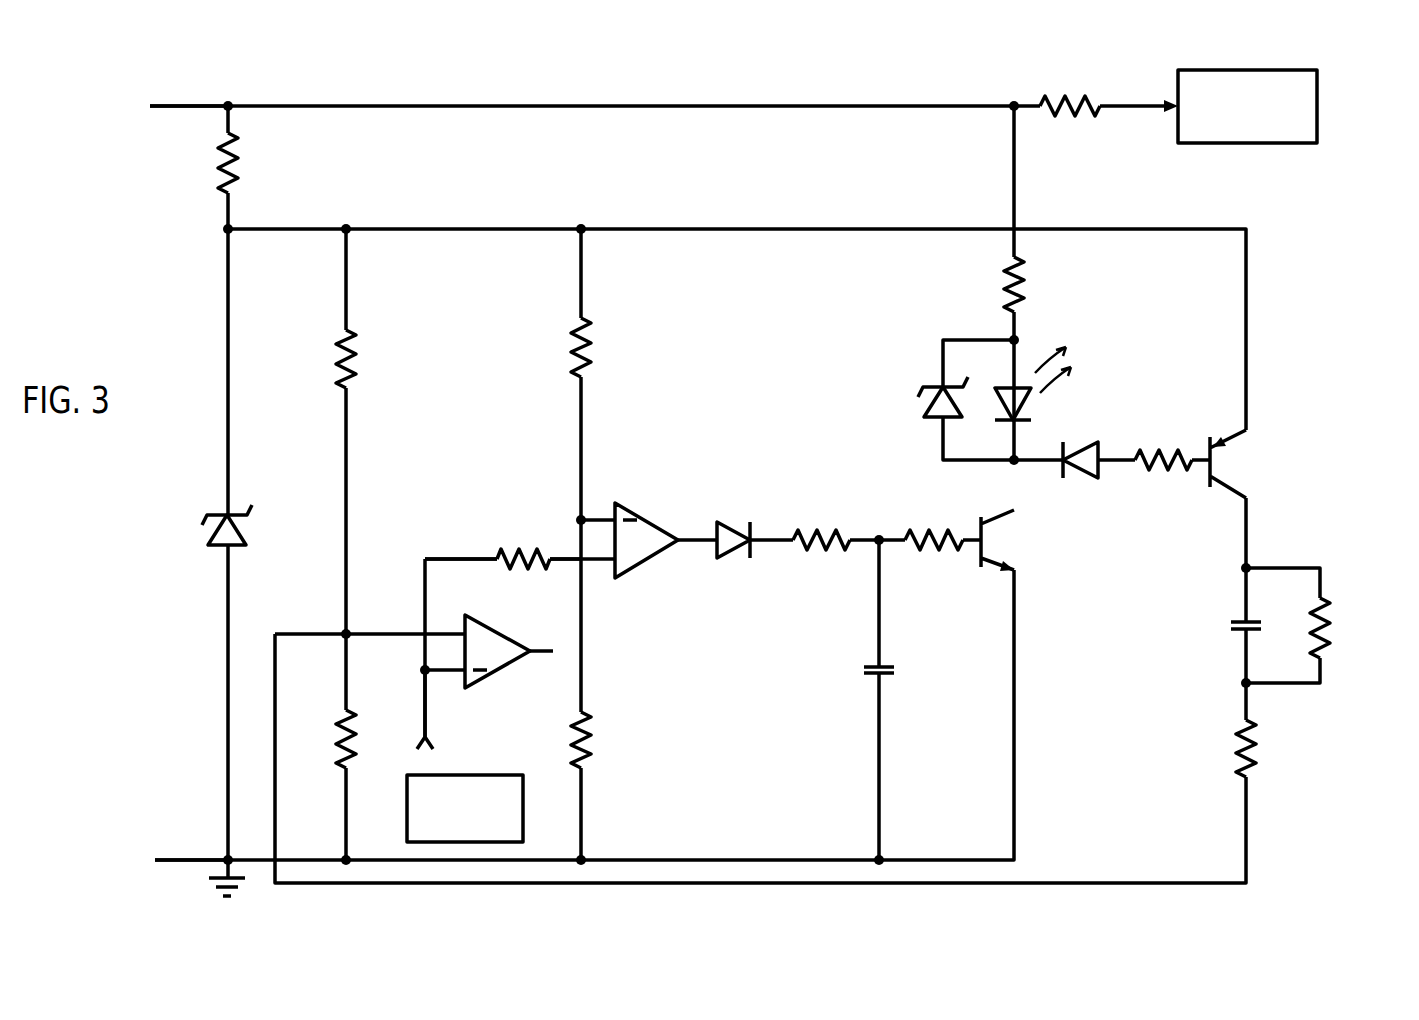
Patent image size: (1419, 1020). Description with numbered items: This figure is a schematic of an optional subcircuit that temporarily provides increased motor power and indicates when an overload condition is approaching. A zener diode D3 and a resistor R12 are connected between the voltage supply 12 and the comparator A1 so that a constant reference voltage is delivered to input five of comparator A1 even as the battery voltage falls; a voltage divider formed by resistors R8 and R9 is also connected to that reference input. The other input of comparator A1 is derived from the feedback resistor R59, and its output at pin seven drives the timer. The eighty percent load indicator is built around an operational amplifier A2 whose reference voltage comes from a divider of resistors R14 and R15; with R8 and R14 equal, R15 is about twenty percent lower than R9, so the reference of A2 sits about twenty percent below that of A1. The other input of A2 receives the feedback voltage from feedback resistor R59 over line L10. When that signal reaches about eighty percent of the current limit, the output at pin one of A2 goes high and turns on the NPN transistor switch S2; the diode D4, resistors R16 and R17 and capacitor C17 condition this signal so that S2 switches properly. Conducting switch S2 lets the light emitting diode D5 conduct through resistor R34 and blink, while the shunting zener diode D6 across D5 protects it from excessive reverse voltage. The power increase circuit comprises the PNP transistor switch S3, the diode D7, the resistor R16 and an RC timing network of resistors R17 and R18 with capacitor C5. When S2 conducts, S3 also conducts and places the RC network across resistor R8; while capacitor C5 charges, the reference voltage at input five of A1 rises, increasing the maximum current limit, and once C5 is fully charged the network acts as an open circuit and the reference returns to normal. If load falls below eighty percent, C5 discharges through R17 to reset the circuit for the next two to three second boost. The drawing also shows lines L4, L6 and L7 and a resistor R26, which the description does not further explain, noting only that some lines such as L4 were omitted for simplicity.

The positive supply line L6 is at (182, 104).
The ground line L7 is at (182, 858).
The resistor R12 is at (220, 170).
The voltage supply 12 is at (1178, 72).
The resistor R26 is at (1073, 98).
The zener diode D3 is at (212, 545).
The resistor R8 is at (355, 350).
The resistor R9 is at (337, 745).
The resistor R14 is at (590, 348).
The resistor R15 is at (587, 757).
The line L10 is at (458, 558).
The line L4 is at (423, 708).
The comparator A1 is at (500, 672).
The feedback resistor R59 is at (465, 773).
The operational amplifier A2 is at (647, 518).
The diode D4 is at (720, 560).
The resistor R16 is at (817, 533).
The resistor R17 is at (925, 535).
The NPN transistor switch S2 is at (980, 560).
The capacitor C17 is at (888, 663).
The resistor R34 is at (1018, 283).
The shunting zener diode D6 is at (928, 418).
The light emitting diode D5 is at (1030, 401).
The diode D7 is at (1098, 480).
The PNP transistor switch S3 is at (1212, 481).
The capacitor C5 is at (1237, 630).
The resistor R18 is at (1255, 745).